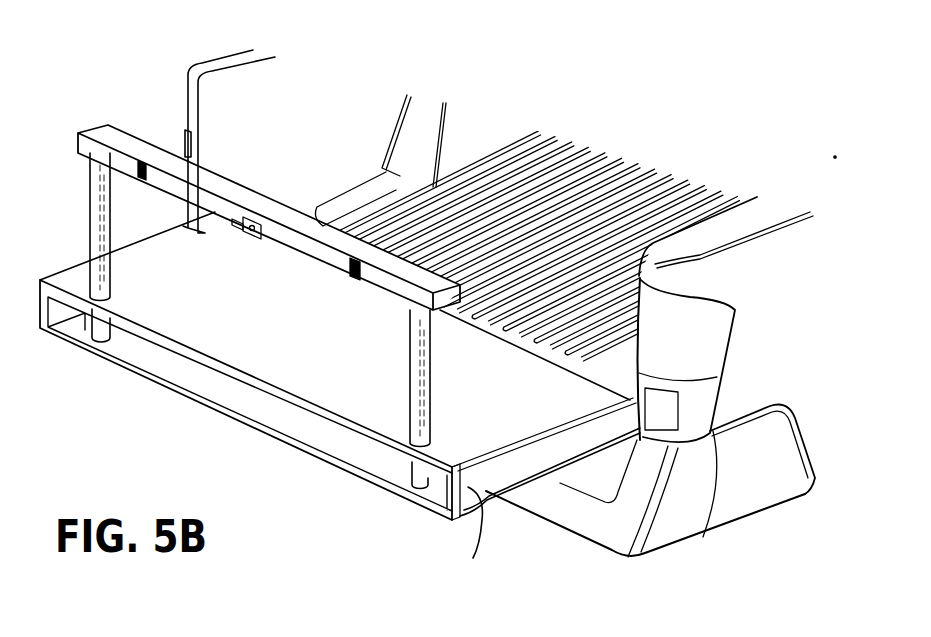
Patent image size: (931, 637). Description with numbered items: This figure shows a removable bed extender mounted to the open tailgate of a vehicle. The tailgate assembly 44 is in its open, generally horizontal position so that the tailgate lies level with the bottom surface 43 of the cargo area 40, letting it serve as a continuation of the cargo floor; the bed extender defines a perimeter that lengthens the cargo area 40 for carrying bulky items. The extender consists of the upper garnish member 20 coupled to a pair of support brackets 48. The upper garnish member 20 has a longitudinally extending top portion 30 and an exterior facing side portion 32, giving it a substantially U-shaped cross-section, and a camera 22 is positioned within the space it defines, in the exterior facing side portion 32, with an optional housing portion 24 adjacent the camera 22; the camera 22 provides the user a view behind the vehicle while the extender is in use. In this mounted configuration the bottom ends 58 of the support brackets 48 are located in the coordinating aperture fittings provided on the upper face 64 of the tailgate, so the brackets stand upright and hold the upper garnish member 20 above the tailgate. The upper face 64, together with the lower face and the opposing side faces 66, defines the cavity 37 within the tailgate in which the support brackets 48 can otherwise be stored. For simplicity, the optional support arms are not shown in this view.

The upper garnish member 20 is at (327, 313).
The camera 22 is at (233, 223).
The housing portion 24 is at (258, 234).
The longitudinally extending top portion 30 is at (269, 229).
The exterior facing side portion 32 is at (347, 262).
The cavity 37 is at (340, 431).
The cargo area 40 is at (511, 318).
The bottom surface 43 is at (552, 203).
The tailgate assembly 44 is at (500, 548).
The support brackets 48 is at (90, 222).
The bottom ends 58 is at (408, 483).
The upper face 64 is at (340, 397).
The opposing side faces 66 is at (482, 514).